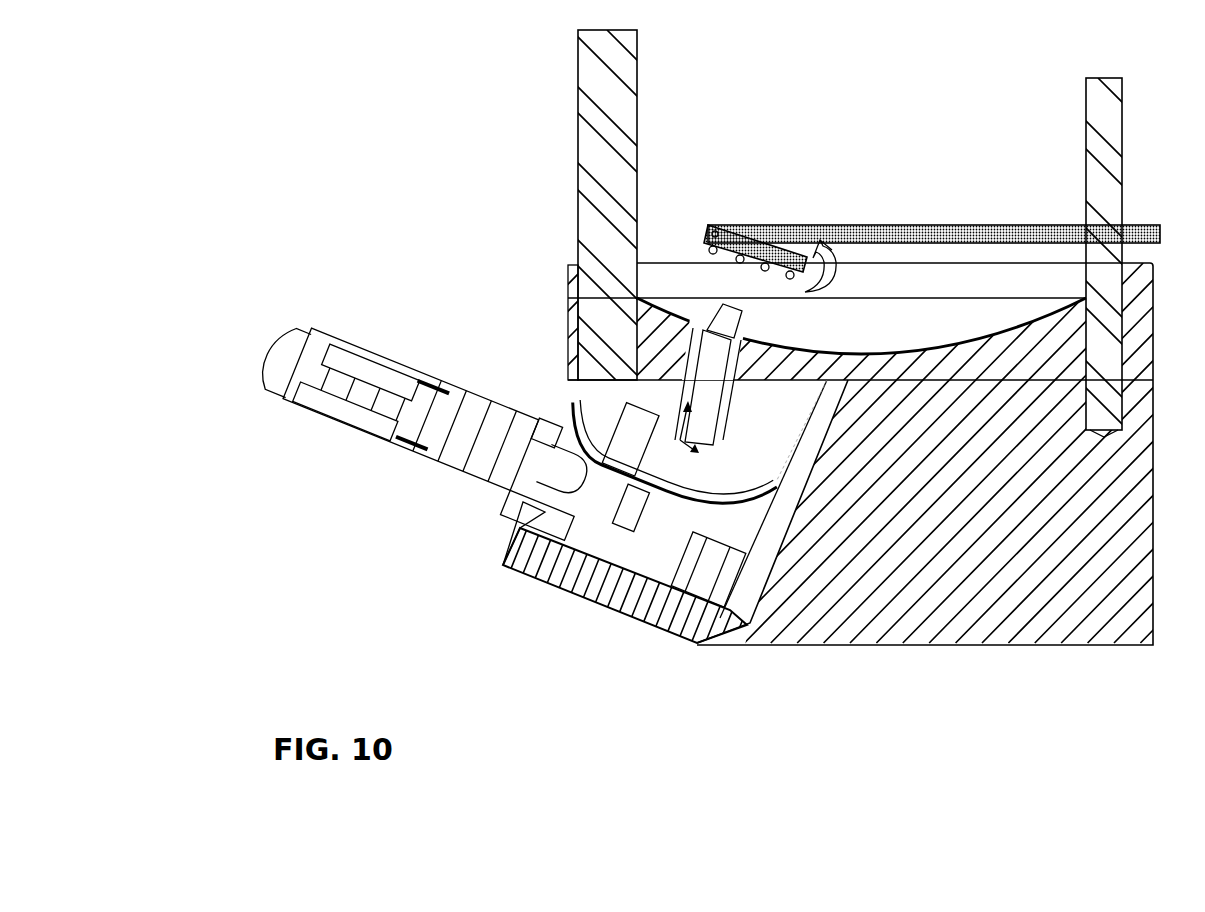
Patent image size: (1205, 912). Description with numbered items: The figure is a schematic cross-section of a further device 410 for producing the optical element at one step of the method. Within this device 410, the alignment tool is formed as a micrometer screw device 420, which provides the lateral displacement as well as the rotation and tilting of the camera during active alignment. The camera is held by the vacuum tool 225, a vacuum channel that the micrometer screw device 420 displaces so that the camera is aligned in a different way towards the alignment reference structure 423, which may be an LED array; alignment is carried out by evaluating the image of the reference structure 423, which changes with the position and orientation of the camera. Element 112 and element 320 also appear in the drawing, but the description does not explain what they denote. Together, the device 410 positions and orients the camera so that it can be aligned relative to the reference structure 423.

The further device 410 is at (272, 104).
The reservoir body with concave dish 112 is at (1045, 348).
The push rod 320 is at (715, 318).
The alignment reference structure 423 is at (742, 253).
The vacuum tool 225 is at (708, 378).
The micrometer screw device 420 is at (533, 519).